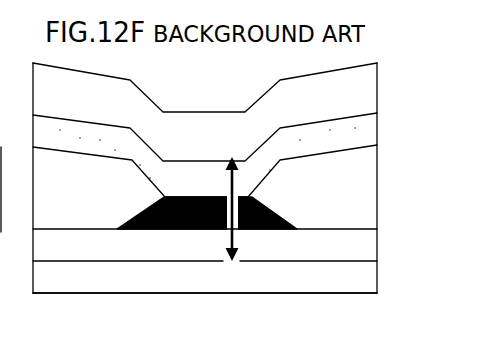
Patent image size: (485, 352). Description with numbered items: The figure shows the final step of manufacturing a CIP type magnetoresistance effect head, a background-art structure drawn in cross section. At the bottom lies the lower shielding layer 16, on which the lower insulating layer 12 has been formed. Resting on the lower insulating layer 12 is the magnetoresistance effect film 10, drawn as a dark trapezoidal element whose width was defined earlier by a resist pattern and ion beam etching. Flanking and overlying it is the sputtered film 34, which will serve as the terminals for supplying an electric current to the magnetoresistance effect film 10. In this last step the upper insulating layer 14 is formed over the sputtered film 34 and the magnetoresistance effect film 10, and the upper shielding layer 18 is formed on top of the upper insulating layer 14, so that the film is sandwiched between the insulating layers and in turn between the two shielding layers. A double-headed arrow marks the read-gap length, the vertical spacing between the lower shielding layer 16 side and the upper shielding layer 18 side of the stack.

The magnetoresistance effect film 10 is at (145, 230).
The lower insulating layer 12 is at (352, 252).
The upper insulating layer 14 is at (353, 135).
The lower shielding layer 16 is at (350, 280).
The upper shielding layer 18 is at (365, 88).
The sputtered film 34 is at (360, 200).